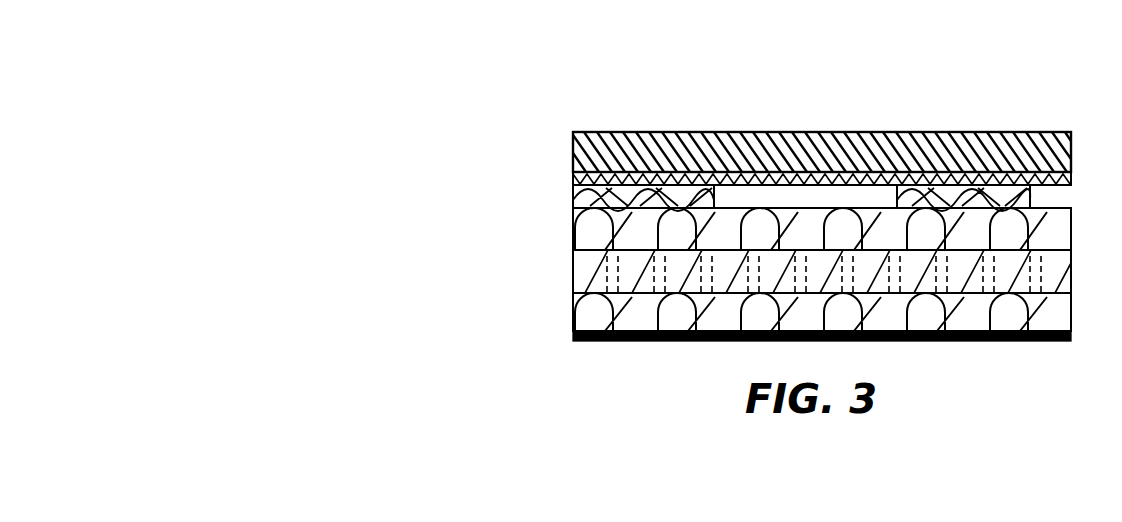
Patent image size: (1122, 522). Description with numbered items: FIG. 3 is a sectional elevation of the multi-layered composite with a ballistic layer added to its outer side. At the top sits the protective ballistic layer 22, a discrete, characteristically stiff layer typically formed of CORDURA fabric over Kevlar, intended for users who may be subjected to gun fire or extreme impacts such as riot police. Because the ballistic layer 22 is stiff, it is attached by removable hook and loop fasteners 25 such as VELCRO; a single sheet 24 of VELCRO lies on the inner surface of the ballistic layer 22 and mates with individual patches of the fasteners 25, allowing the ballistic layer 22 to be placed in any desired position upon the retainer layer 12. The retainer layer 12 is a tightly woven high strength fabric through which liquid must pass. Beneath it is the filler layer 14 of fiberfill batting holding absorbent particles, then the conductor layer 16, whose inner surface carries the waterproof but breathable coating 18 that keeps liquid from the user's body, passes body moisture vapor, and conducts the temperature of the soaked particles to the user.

The protective ballistic layer 22 is at (590, 96).
The single sheet of VELCRO 24 is at (740, 136).
The hook and loop fasteners 25 is at (687, 172).
The retainer layer 12 is at (579, 216).
The filler layer 14 is at (584, 266).
The conductor layer 16 is at (544, 314).
The waterproof breathable coating 18 is at (572, 375).